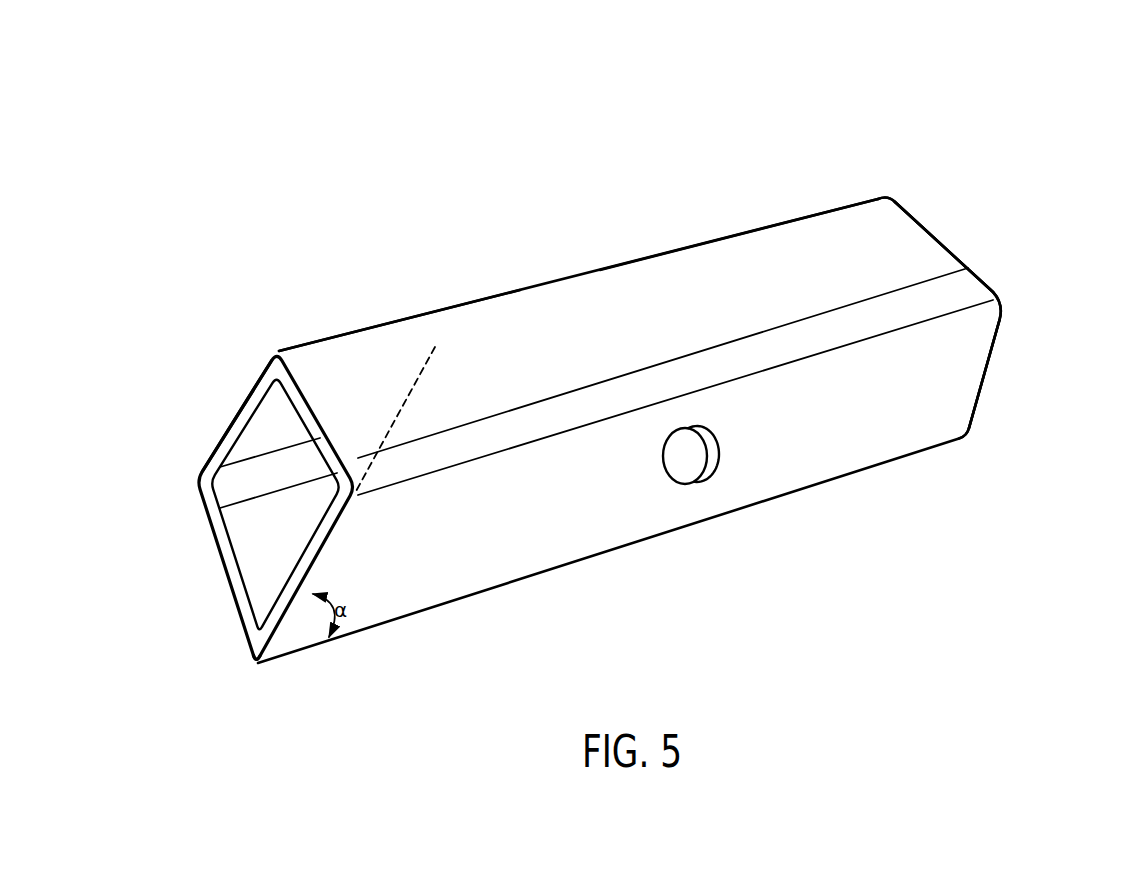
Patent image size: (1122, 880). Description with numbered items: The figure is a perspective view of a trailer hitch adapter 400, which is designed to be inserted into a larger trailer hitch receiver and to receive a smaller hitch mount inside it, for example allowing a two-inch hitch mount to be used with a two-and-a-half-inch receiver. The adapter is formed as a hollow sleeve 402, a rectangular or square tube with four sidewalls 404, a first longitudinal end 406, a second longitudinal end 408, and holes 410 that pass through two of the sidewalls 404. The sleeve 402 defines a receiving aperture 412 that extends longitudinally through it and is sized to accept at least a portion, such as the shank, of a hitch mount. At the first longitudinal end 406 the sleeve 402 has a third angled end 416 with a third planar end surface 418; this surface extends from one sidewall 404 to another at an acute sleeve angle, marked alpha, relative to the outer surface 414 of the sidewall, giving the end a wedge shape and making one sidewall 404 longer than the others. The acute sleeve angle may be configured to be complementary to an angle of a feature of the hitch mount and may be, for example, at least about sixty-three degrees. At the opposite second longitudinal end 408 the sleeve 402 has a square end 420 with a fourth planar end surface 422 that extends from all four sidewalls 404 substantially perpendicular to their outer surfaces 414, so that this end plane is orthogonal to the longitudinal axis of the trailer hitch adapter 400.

The trailer hitch adapter 400 is at (394, 124).
The hollow sleeve 402 is at (852, 217).
The sidewalls 404 is at (923, 242).
The first longitudinal end 406 is at (144, 464).
The second longitudinal end 408 is at (1012, 303).
The holes 410 is at (712, 462).
The receiving aperture 412 is at (249, 538).
The outer surface 414 is at (344, 358).
The third angled end 416 is at (233, 417).
The third planar end surface 418 is at (261, 640).
The square end 420 is at (973, 424).
The fourth planar end surface 422 is at (908, 207).